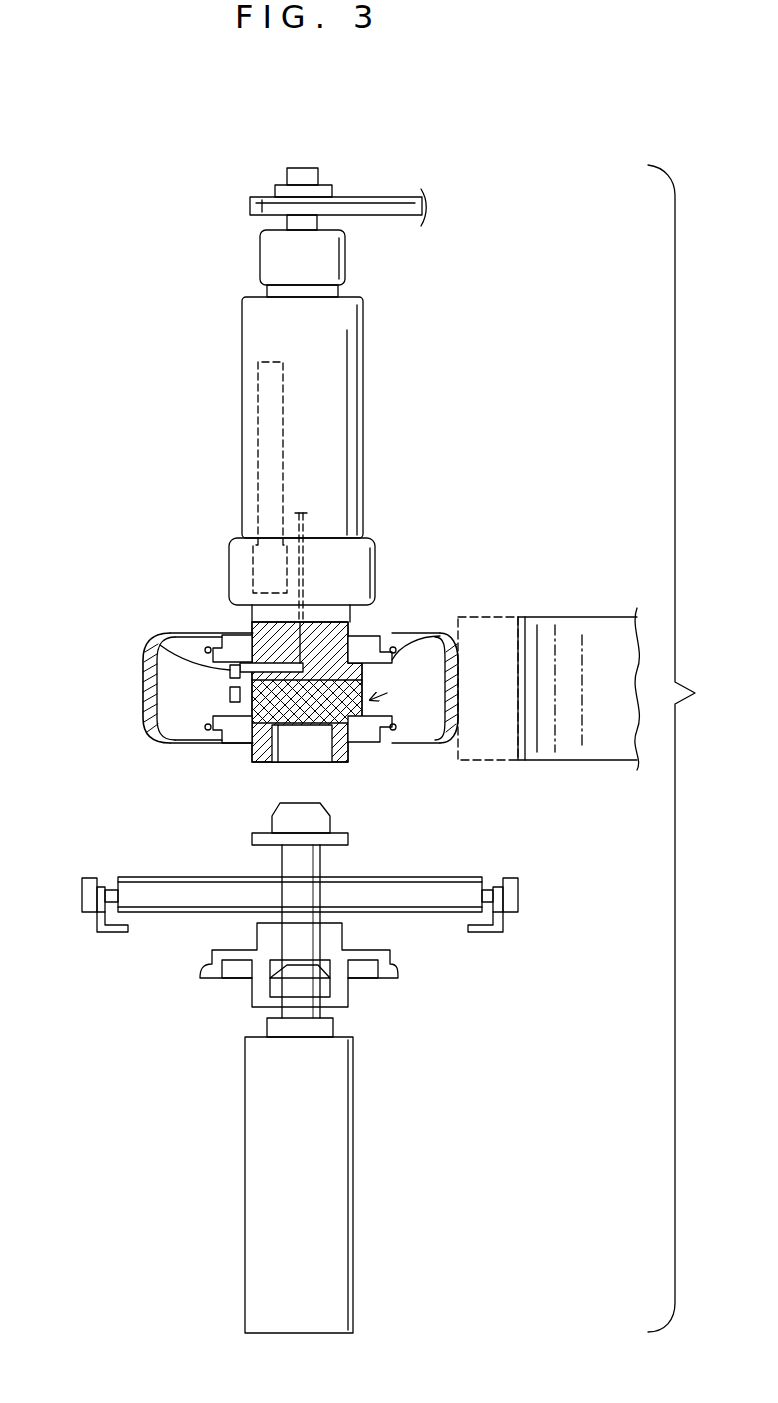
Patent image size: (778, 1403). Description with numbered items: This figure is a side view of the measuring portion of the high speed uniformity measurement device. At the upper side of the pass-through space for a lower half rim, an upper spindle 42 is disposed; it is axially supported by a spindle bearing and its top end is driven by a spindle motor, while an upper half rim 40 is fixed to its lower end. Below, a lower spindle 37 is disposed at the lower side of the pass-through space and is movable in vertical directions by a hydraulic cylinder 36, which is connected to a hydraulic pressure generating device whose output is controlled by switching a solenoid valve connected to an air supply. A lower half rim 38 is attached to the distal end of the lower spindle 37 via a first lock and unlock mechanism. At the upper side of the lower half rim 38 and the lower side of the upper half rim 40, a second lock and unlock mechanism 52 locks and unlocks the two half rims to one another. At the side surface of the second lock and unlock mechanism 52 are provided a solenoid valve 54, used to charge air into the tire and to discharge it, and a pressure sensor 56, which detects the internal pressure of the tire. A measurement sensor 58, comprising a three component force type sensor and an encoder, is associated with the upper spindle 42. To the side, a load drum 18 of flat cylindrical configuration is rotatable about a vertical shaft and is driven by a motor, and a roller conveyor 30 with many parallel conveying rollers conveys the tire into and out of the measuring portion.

The load drum 18 is at (495, 617).
The roller conveyor 30 is at (419, 914).
The hydraulic cylinder 36 is at (338, 1132).
The lower spindle 37 is at (305, 868).
The lower half rim 38 is at (388, 740).
The upper half rim 40 is at (390, 640).
The upper spindle 42 is at (335, 366).
The second lock and unlock mechanism 52 is at (402, 702).
The solenoid valve 54 is at (230, 670).
The pressure sensor 56 is at (230, 696).
The measurement sensor 58 is at (265, 447).